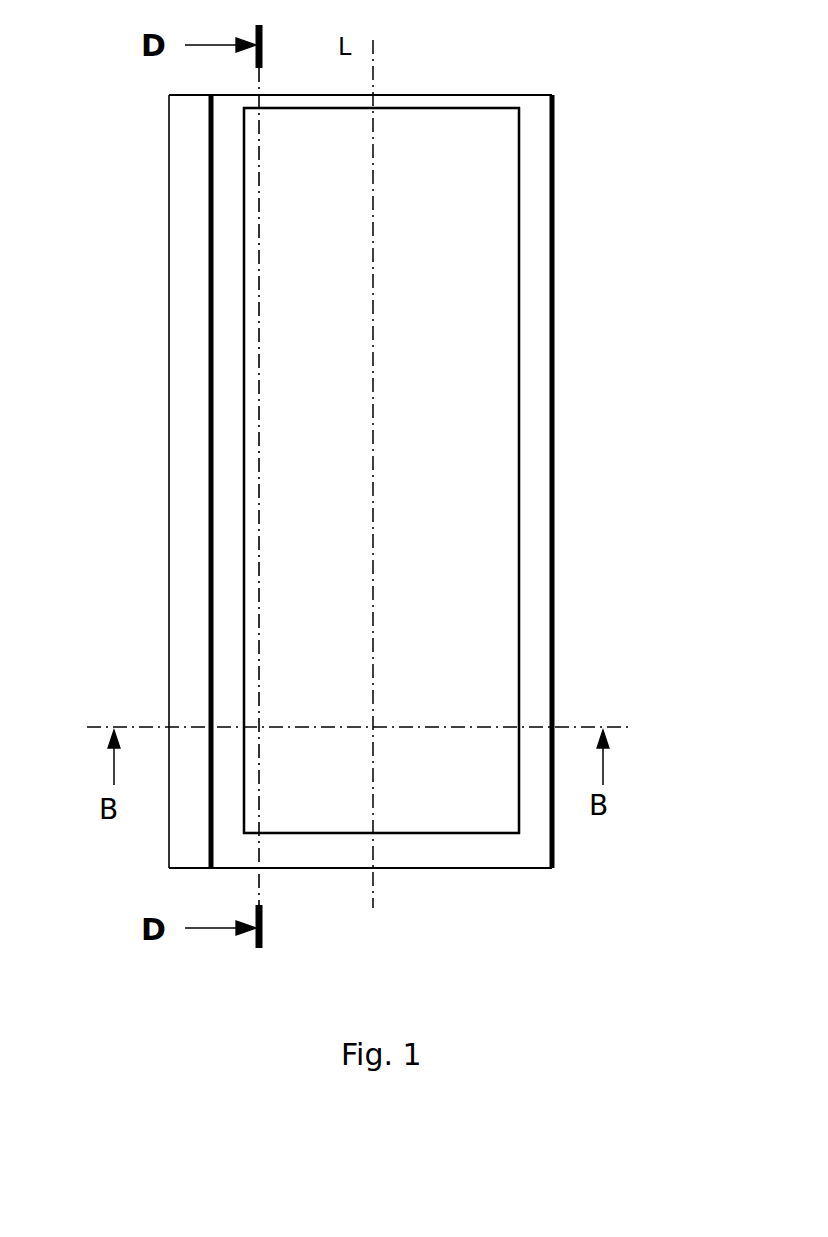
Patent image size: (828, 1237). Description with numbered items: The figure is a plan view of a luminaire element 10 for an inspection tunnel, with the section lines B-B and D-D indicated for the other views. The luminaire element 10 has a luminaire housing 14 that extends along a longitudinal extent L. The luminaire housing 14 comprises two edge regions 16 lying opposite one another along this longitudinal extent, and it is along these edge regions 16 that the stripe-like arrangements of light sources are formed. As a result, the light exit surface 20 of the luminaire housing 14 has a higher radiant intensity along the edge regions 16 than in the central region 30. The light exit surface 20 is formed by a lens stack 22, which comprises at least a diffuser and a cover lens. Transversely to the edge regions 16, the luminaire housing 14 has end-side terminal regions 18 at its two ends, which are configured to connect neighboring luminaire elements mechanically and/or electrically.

The luminaire element 10 is at (553, 72).
The luminaire housing 14 is at (555, 190).
The edge regions 16 is at (234, 405).
The end-side terminal regions 18 is at (420, 92).
The light exit surface 20 is at (452, 328).
The lens stack 22 is at (452, 328).
The central region 30 is at (407, 562).